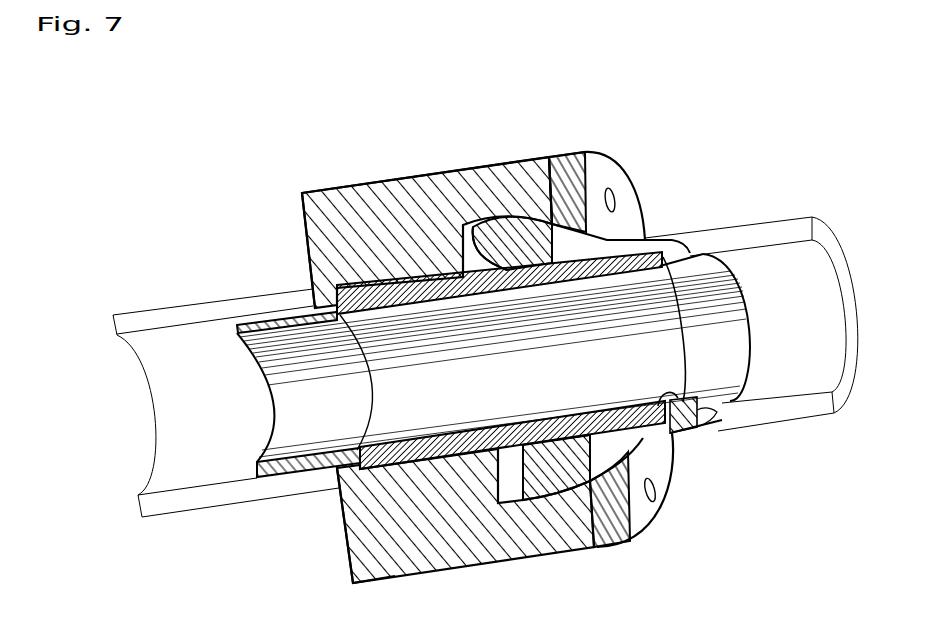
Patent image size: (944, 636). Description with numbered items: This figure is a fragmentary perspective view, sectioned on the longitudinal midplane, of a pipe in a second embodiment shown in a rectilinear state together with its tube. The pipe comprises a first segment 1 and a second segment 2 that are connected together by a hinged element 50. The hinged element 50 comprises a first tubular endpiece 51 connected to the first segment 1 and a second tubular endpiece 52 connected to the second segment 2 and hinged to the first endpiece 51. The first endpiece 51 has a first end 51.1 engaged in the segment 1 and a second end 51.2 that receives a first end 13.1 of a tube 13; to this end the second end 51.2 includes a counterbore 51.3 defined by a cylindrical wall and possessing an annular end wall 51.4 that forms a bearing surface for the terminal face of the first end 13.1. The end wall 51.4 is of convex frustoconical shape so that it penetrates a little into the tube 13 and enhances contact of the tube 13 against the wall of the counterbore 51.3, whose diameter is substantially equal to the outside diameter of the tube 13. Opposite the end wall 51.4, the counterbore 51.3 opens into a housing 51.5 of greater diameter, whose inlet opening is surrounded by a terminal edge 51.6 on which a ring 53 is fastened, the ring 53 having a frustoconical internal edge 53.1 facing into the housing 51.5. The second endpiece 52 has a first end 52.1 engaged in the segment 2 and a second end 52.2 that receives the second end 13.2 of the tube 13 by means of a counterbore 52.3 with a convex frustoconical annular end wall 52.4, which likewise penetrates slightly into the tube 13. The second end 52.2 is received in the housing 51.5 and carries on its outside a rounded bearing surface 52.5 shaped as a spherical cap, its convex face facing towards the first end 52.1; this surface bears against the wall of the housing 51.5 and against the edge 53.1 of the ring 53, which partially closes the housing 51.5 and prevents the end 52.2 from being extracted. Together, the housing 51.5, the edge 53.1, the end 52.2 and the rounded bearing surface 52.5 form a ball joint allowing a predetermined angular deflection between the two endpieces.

The first segment 1 is at (170, 313).
The second segment 2 is at (790, 223).
The tube 13 is at (513, 430).
The first end of the tube 13.1 is at (393, 470).
The second end of the tube 13.2 is at (652, 437).
The hinged element 50 is at (466, 153).
The first tubular endpiece 51 is at (424, 197).
The first end of the first endpiece 51.1 is at (297, 478).
The second end of the first endpiece 51.2 is at (467, 543).
The counterbore 51.3 is at (382, 306).
The annular end wall 51.4 is at (336, 289).
The housing 51.5 is at (537, 215).
The terminal edge 51.6 is at (566, 205).
The second tubular endpiece 52 is at (683, 233).
The first end of the second endpiece 52.1 is at (723, 402).
The second end of the second endpiece 52.2 is at (655, 500).
The counterbore 52.3 is at (562, 513).
The annular end wall 52.4 is at (680, 388).
The rounded bearing surface 52.5 is at (606, 540).
The ring 53 is at (583, 182).
The frustoconical internal edge 53.1 is at (606, 218).